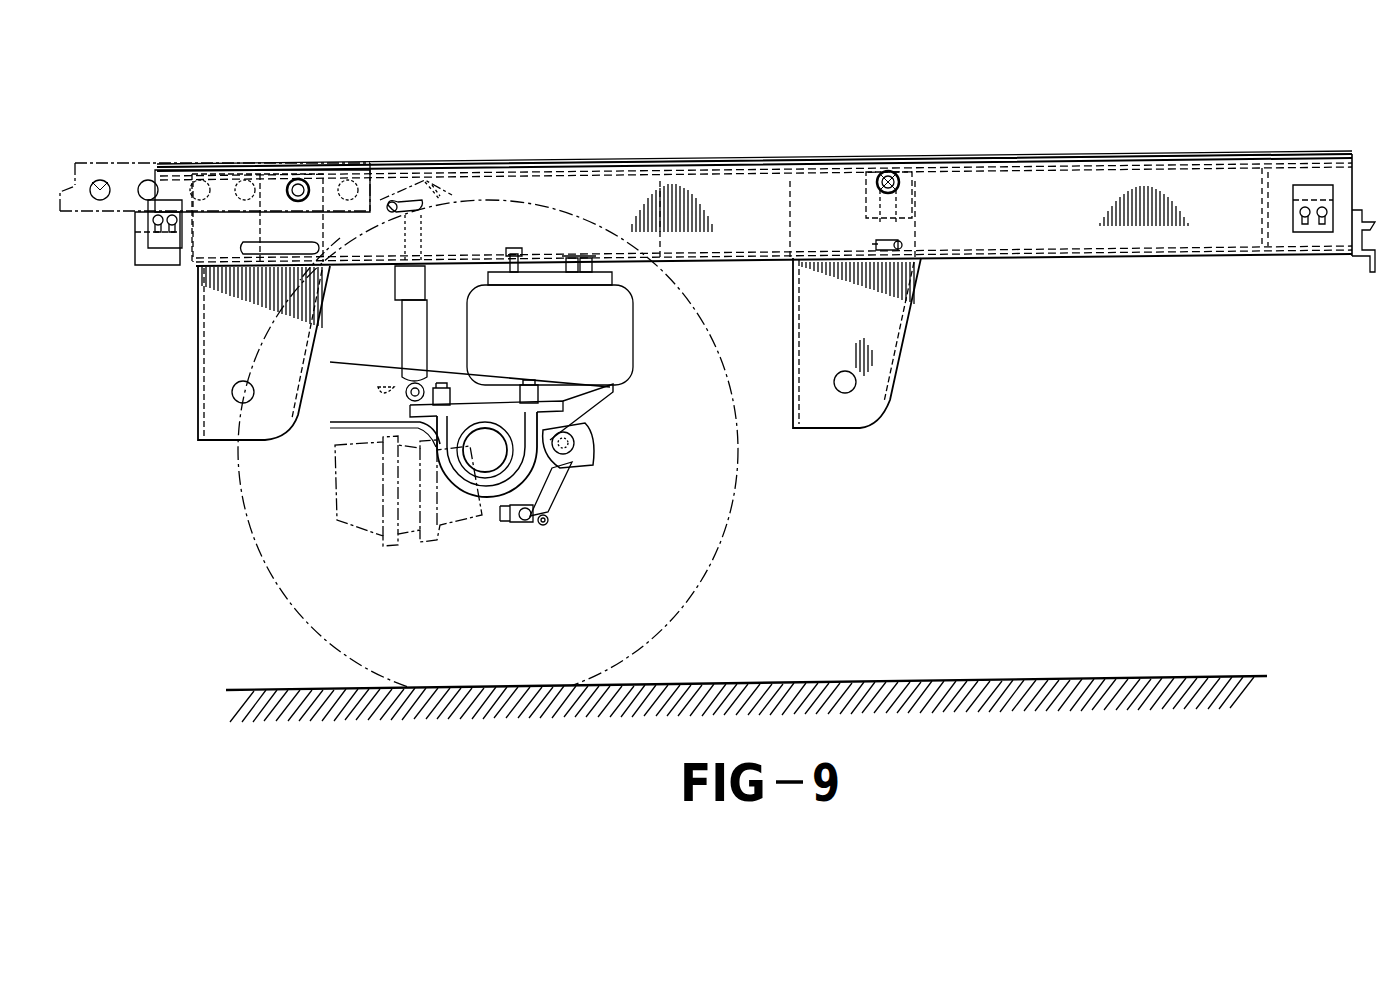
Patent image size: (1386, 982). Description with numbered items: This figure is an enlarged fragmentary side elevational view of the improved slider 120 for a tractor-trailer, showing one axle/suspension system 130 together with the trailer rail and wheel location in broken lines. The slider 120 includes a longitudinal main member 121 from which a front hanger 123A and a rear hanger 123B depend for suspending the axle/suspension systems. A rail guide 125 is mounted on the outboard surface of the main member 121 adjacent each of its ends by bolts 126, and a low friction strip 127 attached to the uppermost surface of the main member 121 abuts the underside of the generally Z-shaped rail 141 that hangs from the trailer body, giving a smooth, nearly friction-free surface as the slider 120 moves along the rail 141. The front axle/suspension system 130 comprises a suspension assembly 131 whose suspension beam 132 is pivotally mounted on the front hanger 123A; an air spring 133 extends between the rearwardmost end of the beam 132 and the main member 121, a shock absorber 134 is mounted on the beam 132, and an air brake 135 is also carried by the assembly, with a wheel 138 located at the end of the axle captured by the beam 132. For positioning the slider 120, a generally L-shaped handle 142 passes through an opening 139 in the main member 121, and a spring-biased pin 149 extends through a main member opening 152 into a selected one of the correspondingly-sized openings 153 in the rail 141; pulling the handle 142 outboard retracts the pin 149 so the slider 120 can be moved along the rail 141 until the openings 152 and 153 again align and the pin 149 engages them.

The slider 120 is at (742, 146).
The main member 121 is at (1155, 240).
The front hanger 123A is at (203, 390).
The rear hanger 123B is at (895, 340).
The rail guide 125 is at (158, 240).
The bolt 126 is at (152, 226).
The low friction strip 127 is at (588, 158).
The front axle/suspension system 130 is at (535, 522).
The suspension assembly 131 is at (565, 478).
The suspension beam 132 is at (318, 402).
The air spring 133 is at (605, 338).
The shock absorber 134 is at (408, 330).
The air brake 135 is at (357, 488).
The wheel 138 is at (718, 558).
The opening 139 is at (312, 242).
The rail 141 is at (135, 166).
The handle 142 is at (250, 254).
The pin 149 is at (298, 185).
The main member opening 152 is at (250, 188).
The rail opening 153 is at (100, 178).